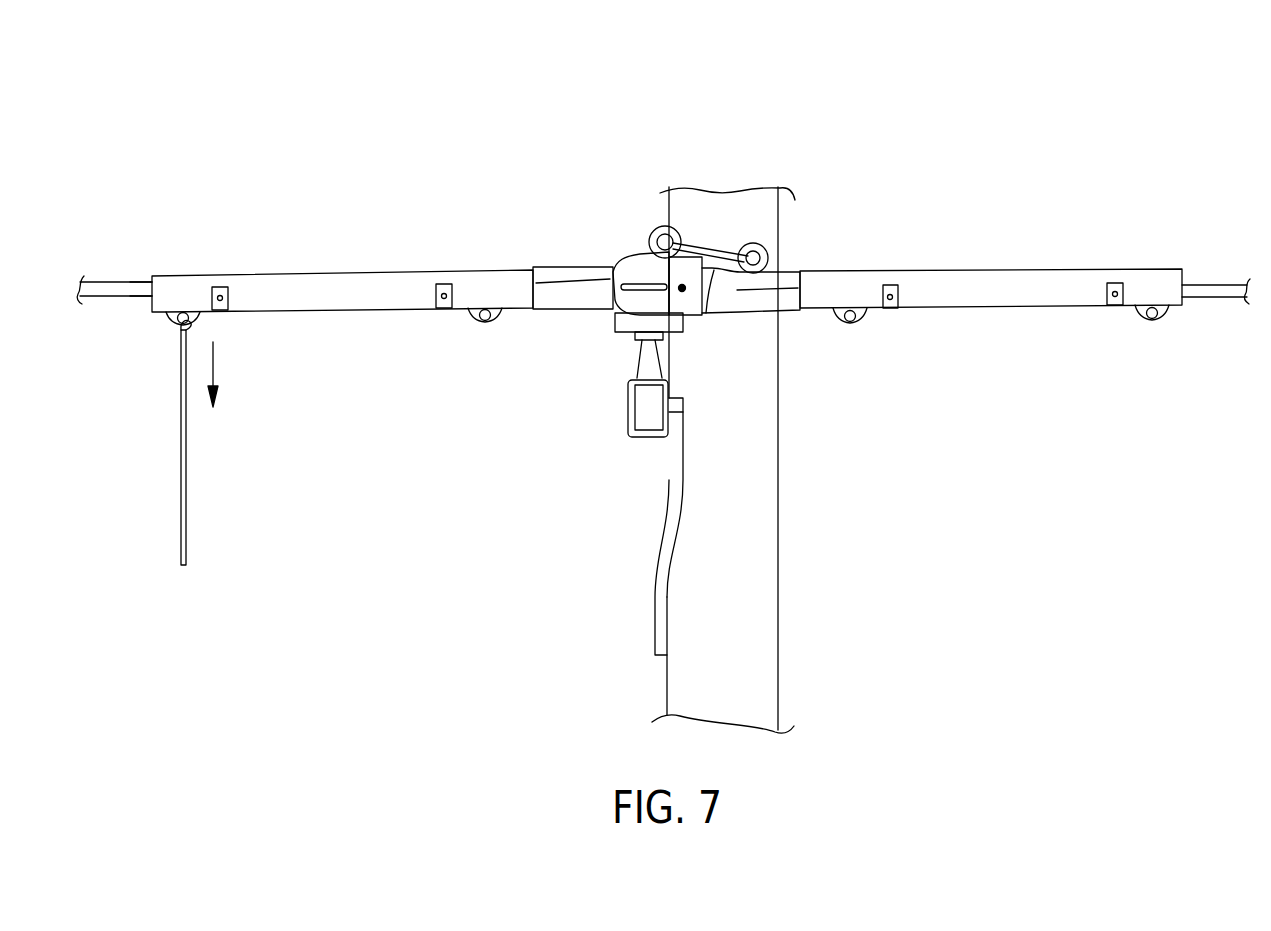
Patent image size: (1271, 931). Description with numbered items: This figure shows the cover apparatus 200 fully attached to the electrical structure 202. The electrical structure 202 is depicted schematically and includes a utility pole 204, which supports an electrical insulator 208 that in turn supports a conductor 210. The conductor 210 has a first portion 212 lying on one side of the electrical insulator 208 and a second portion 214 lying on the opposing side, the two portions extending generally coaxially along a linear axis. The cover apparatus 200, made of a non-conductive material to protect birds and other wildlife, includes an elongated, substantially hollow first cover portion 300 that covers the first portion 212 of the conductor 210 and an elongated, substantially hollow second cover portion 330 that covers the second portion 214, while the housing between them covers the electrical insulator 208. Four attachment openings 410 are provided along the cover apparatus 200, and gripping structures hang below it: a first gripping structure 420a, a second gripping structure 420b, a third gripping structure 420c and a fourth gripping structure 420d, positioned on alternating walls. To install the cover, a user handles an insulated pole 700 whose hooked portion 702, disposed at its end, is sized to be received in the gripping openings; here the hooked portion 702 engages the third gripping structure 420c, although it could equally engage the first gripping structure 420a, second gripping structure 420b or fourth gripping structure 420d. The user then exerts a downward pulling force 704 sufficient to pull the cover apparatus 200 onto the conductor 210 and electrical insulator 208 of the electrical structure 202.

The cover apparatus 200 is at (168, 126).
The electrical structure 202 is at (594, 549).
The utility pole 204 is at (778, 541).
The electrical insulator 208 is at (615, 323).
The conductor 210 is at (97, 283).
The first portion 212 is at (137, 283).
The second portion 214 is at (1210, 283).
The first cover portion 300 is at (523, 268).
The second cover portion 330 is at (1020, 270).
The attachment opening 410 is at (220, 295).
The first gripping structure 420a is at (471, 312).
The second gripping structure 420b is at (862, 318).
The third gripping structure 420c is at (176, 320).
The fourth gripping structure 420d is at (1163, 318).
The insulated pole 700 is at (181, 465).
The hooked portion 702 is at (197, 323).
The pulling force 704 is at (214, 371).